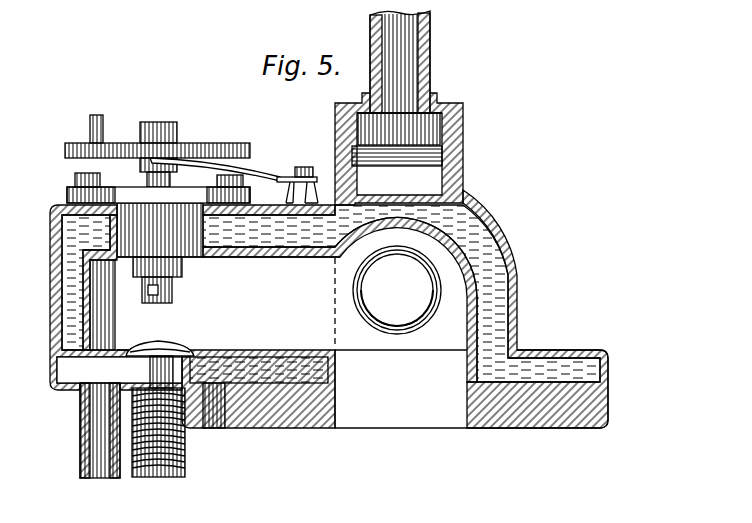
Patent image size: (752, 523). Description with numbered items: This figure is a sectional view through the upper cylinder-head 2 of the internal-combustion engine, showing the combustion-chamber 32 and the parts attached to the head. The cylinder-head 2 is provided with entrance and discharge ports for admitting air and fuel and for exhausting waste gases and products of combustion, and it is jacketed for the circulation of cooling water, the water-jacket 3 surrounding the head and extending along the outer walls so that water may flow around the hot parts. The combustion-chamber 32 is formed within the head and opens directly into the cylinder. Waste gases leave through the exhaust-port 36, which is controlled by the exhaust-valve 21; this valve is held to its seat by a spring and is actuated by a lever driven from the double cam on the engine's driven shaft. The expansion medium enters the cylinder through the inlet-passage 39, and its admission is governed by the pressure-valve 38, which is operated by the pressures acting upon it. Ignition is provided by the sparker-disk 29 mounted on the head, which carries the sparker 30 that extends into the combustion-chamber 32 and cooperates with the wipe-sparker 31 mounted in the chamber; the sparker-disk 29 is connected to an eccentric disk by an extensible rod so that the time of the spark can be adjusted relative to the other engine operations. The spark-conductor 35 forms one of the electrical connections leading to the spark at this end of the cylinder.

The cylinder-head 2 is at (588, 394).
The water-jacket 3 is at (72, 312).
The exhaust-valve 21 is at (397, 290).
The sparker-disk 29 is at (235, 145).
The sparker 30 is at (173, 276).
The wipe-sparker 31 is at (152, 302).
The combustion-chamber 32 is at (228, 303).
The spark-conductor 35 is at (287, 166).
The exhaust-port 36 is at (437, 63).
The pressure-valve 38 is at (182, 344).
The inlet-passage 39 is at (100, 440).